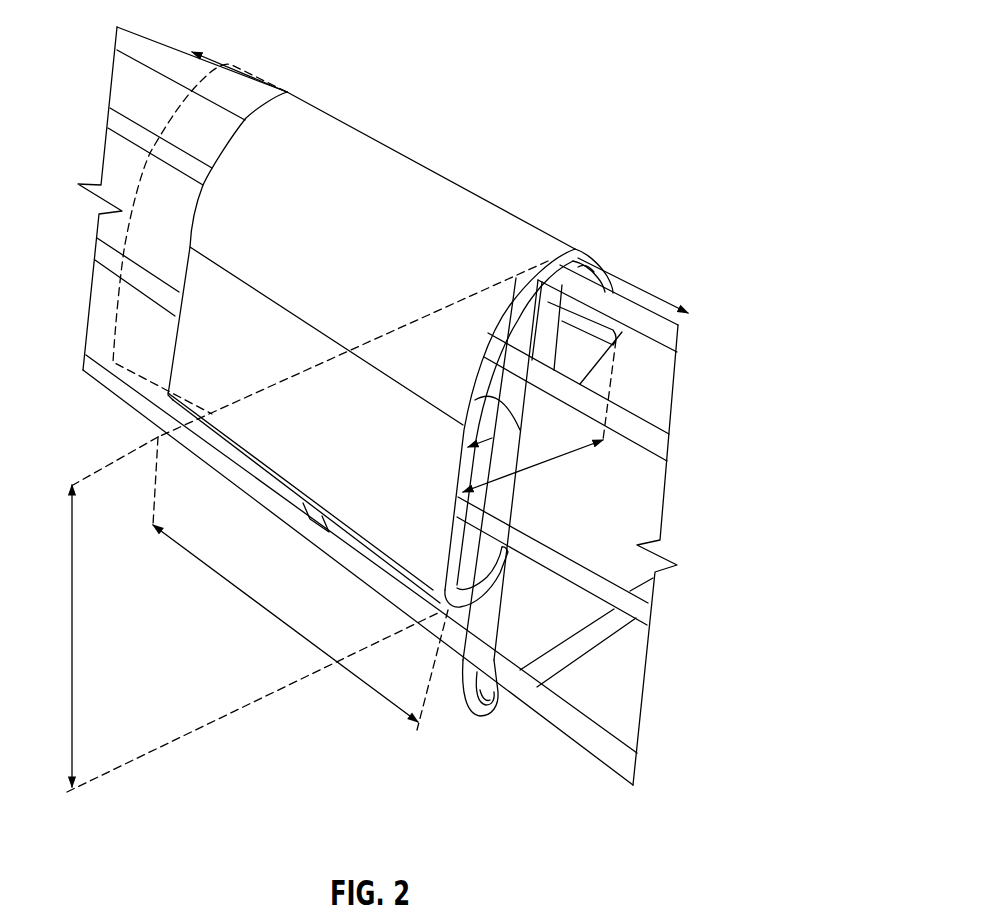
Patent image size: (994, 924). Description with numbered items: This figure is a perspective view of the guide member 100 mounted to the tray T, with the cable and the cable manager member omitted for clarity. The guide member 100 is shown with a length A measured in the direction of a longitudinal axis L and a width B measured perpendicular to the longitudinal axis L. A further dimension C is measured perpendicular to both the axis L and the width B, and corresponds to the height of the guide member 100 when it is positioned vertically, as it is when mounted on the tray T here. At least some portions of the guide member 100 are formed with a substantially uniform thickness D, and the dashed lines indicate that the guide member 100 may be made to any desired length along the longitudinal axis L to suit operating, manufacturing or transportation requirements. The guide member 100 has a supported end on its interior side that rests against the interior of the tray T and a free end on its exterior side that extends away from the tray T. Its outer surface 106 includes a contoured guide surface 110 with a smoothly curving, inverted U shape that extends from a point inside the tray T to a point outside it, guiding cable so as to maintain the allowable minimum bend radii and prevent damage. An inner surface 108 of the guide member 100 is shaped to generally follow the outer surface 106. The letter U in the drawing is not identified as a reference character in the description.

The guide member 100 is at (528, 195).
The outer surface 106 is at (353, 127).
The inner surface 108 is at (511, 426).
The contoured guide surface 110 is at (445, 193).
The length A is at (275, 612).
The width B is at (549, 458).
The dimension C is at (72, 642).
The thickness D is at (455, 457).
The longitudinal axis L is at (625, 282).
The tray T is at (158, 30).
The upward direction U is at (670, 337).